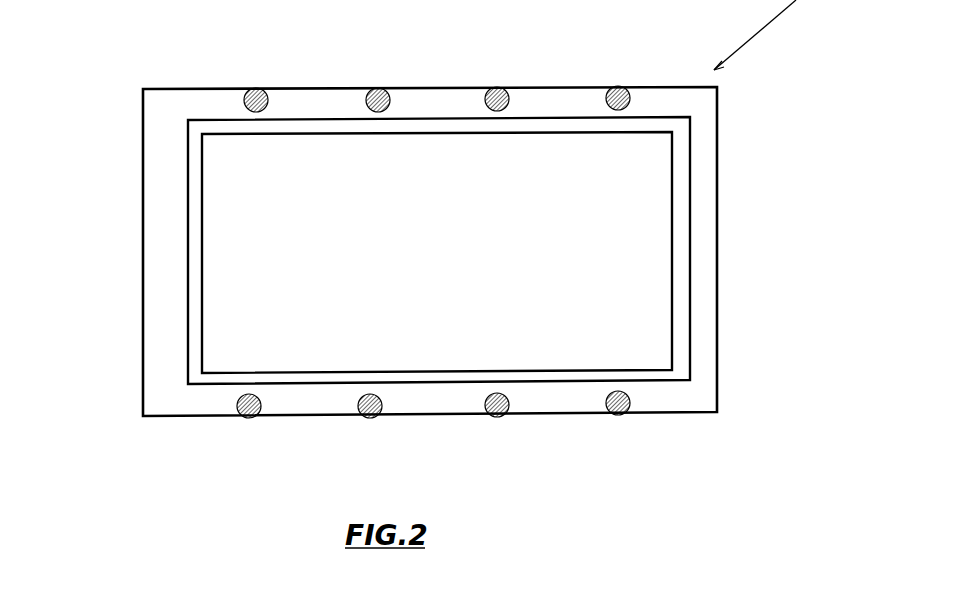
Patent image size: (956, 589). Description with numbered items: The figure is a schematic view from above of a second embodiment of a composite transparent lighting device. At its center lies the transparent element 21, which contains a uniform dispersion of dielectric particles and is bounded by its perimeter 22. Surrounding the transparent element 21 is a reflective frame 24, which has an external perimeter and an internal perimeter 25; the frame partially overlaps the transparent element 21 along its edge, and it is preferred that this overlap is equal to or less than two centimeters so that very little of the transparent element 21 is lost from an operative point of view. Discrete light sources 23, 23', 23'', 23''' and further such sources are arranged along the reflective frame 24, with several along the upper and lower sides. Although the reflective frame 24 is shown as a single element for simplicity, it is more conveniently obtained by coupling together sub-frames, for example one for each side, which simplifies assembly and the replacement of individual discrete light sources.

The transparent element 21 is at (268, 262).
The perimeter 22 is at (690, 262).
The discrete light source 23 is at (220, 75).
The discrete light source 23' is at (377, 75).
The discrete light source 23'' is at (507, 66).
The discrete light source 23''' is at (629, 70).
The reflective frame 24 is at (722, 208).
The internal perimeter 25 is at (672, 340).